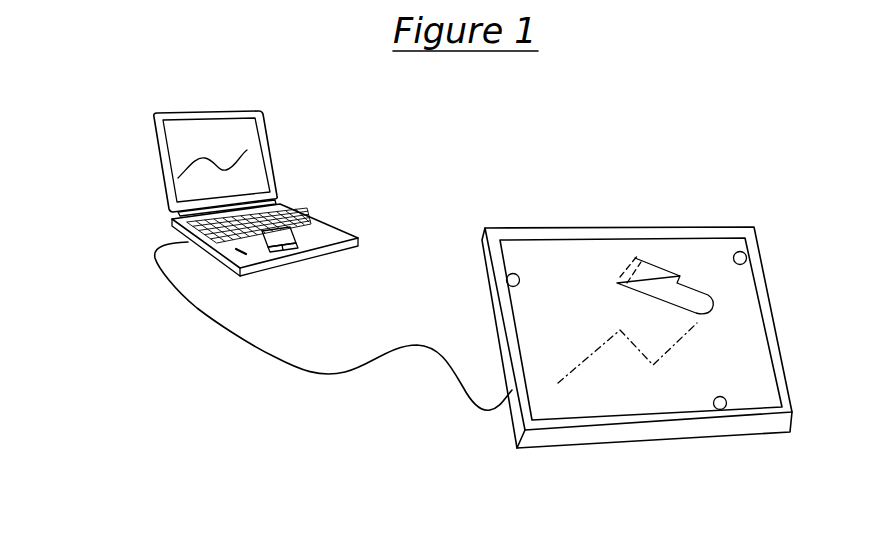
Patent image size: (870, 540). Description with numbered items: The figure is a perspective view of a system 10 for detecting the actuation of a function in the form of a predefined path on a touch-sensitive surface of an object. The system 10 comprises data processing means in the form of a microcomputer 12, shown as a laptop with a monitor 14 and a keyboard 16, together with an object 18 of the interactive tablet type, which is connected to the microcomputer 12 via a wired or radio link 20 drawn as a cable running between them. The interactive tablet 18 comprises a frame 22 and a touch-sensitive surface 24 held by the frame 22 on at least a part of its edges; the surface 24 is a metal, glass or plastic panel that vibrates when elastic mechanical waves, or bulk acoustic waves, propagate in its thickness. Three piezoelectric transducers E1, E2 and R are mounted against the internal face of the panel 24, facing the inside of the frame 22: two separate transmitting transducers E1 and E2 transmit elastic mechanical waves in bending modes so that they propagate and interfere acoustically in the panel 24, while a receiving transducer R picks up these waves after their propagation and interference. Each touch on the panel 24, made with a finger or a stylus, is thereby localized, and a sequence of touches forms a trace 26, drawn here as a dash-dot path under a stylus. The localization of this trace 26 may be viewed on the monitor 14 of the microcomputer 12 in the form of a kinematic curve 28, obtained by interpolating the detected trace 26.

The system 10 is at (109, 386).
The microcomputer 12 is at (291, 167).
The monitor 14 is at (195, 135).
The keyboard 16 is at (293, 215).
The object of the interactive tablet type 18 is at (613, 208).
The wired or radio link 20 is at (297, 365).
The frame 22 is at (785, 342).
The touch-sensitive surface 24 is at (592, 398).
The trace 26 is at (607, 335).
The kinematic curve 28 is at (182, 172).
The transmitting transducer E1 is at (508, 284).
The transmitting transducer E2 is at (746, 253).
The receiving transducer R is at (721, 409).